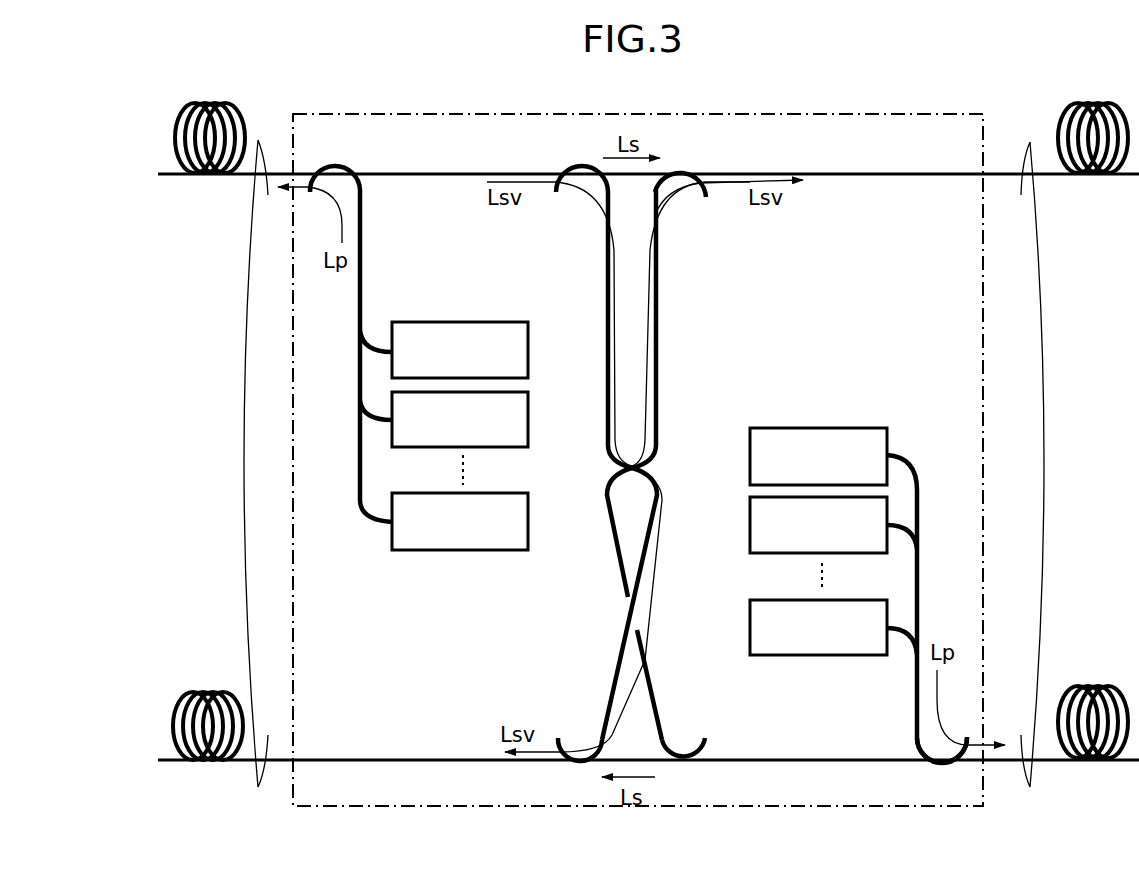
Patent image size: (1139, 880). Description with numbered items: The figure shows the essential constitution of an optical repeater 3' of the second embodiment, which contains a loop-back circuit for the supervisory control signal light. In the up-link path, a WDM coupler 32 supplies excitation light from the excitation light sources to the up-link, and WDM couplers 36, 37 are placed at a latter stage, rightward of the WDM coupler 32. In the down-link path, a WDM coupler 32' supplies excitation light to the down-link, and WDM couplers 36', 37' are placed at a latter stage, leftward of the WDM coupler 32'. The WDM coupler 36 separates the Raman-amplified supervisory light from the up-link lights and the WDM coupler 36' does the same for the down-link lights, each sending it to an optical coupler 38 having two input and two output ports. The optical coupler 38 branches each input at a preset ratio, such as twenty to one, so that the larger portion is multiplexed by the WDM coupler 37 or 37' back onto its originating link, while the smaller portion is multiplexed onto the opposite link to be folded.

The optical repeater 3' is at (638, 441).
The WDM coupler 32 is at (346, 163).
The WDM coupler 32' is at (918, 766).
The WDM coupler 36 is at (562, 294).
The WDM coupler 36' is at (706, 771).
The WDM coupler 37 is at (699, 303).
The WDM coupler 37' is at (562, 771).
The optical coupler 38 is at (630, 468).